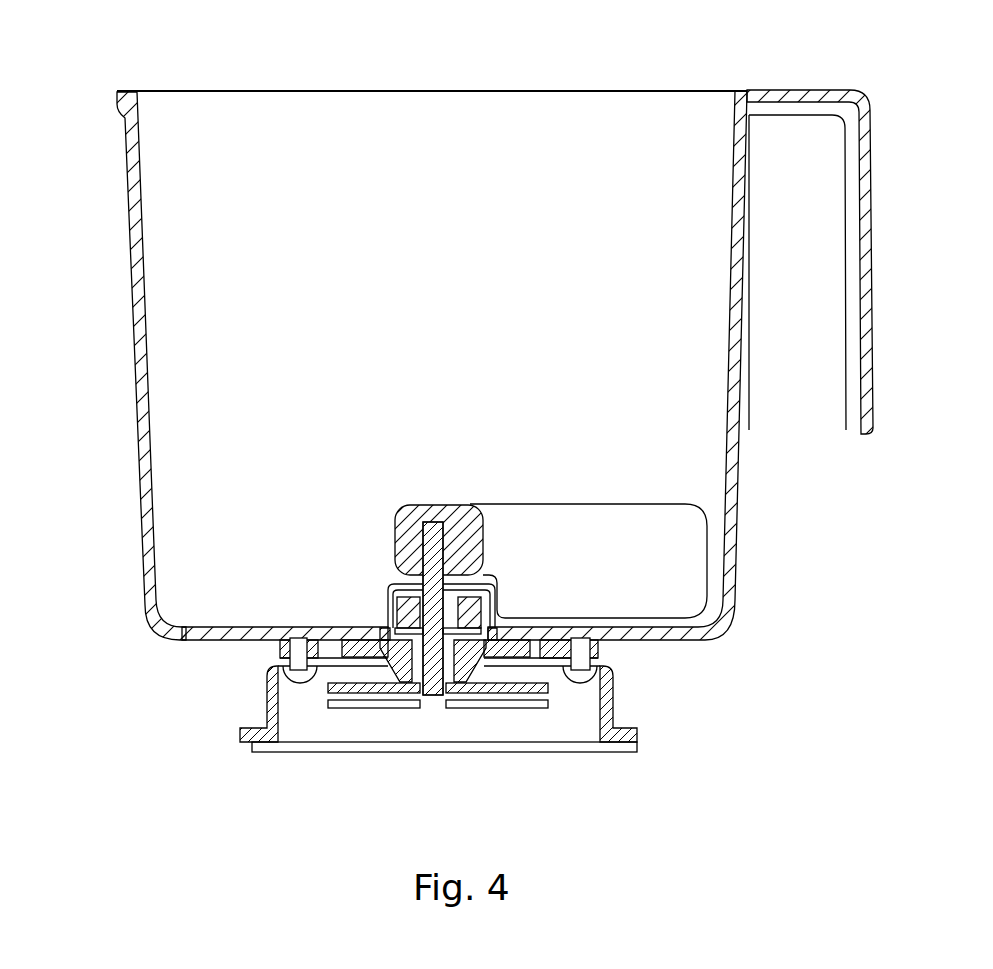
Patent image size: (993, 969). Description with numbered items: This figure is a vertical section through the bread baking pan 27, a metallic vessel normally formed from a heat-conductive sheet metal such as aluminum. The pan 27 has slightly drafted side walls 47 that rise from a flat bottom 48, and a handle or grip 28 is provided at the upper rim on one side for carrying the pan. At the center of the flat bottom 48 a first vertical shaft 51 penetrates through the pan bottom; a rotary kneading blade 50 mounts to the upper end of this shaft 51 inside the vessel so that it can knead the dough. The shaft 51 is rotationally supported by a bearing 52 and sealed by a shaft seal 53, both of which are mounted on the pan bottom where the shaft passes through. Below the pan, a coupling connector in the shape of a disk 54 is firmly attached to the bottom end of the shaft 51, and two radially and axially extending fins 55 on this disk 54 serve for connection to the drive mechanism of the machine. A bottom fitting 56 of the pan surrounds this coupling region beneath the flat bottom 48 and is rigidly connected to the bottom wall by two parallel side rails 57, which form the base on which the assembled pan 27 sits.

The bread baking pan 27 is at (522, 116).
The handle 28 is at (862, 142).
The side walls 47 is at (736, 524).
The flat bottom 48 is at (210, 632).
The rotary kneading blade 50 is at (674, 589).
The first vertical shaft 51 is at (437, 700).
The bearing 52 is at (394, 652).
The shaft seal 53 is at (412, 585).
The disk 54 is at (518, 700).
The fins 55 is at (343, 706).
The bottom fitting 56 is at (620, 693).
The side rails 57 is at (642, 735).